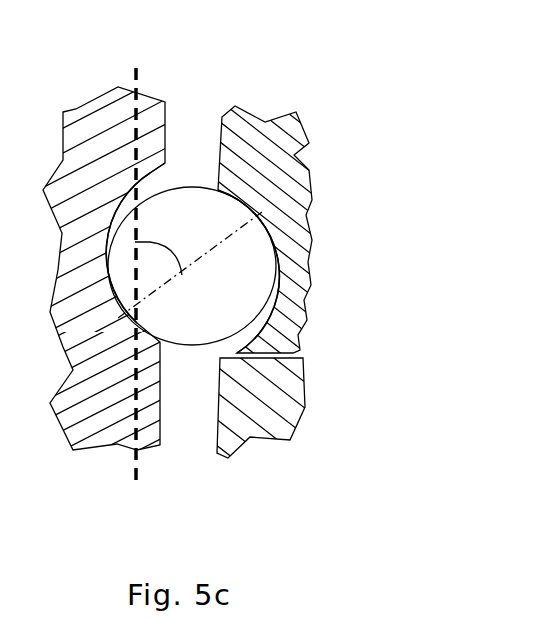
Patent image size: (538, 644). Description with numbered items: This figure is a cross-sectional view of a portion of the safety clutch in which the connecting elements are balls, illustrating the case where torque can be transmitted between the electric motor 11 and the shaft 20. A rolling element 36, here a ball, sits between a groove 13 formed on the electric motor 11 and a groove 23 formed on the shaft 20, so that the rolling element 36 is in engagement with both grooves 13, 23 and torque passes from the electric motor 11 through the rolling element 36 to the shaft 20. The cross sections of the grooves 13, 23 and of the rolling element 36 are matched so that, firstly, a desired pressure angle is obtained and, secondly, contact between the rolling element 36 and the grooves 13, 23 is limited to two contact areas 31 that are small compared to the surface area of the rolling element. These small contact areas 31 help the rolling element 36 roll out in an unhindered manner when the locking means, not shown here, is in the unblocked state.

The shaft 20 is at (107, 148).
The electric motor 11 is at (267, 170).
The grooves 13 is at (233, 354).
The grooves 23 is at (152, 173).
The contact areas 31 is at (245, 212).
The rolling elements 36 is at (202, 307).